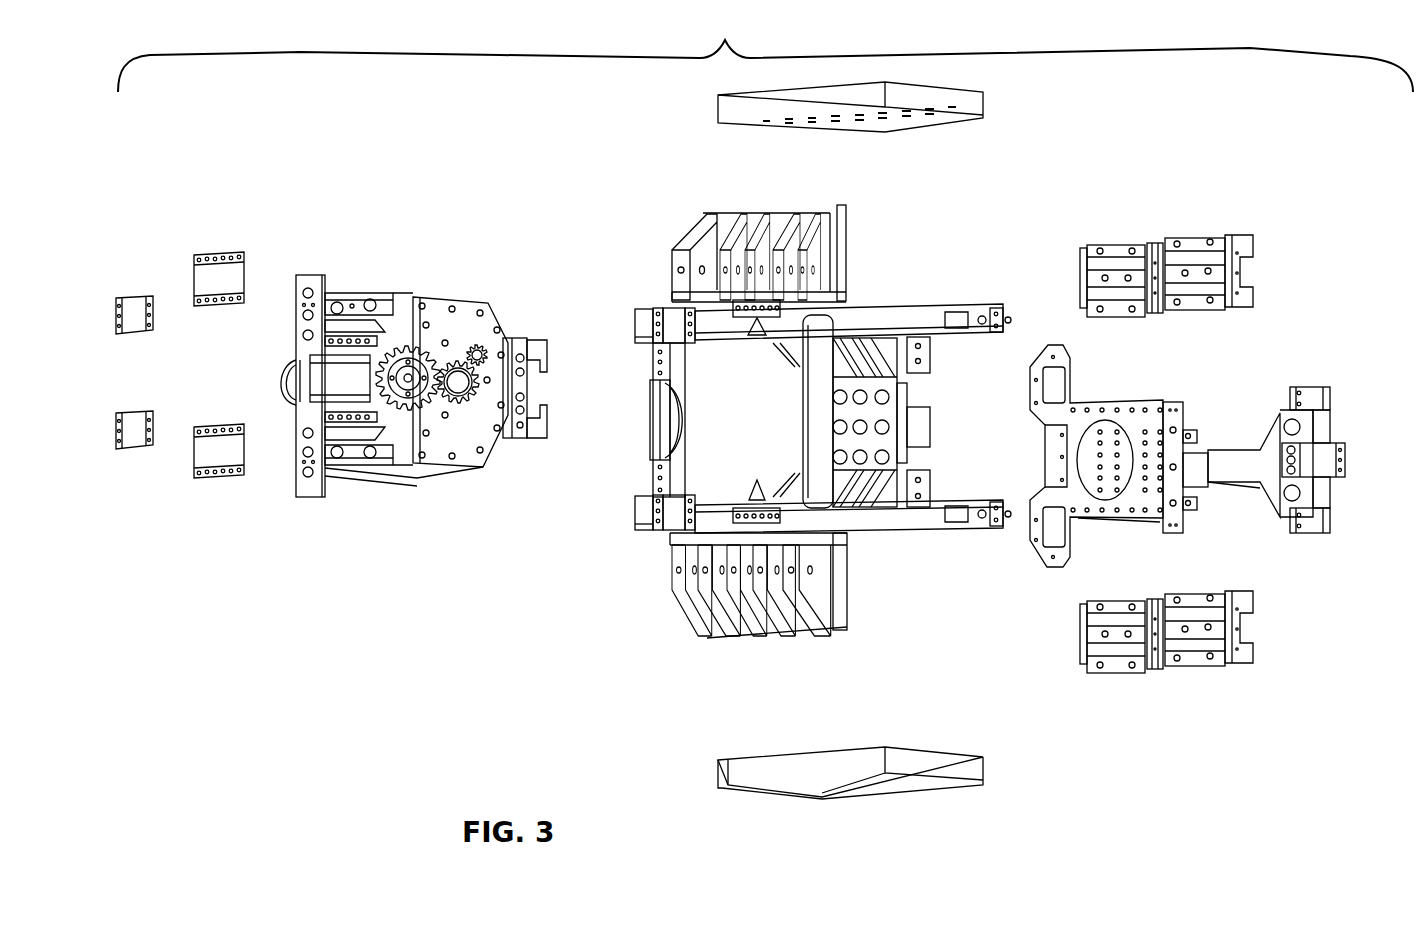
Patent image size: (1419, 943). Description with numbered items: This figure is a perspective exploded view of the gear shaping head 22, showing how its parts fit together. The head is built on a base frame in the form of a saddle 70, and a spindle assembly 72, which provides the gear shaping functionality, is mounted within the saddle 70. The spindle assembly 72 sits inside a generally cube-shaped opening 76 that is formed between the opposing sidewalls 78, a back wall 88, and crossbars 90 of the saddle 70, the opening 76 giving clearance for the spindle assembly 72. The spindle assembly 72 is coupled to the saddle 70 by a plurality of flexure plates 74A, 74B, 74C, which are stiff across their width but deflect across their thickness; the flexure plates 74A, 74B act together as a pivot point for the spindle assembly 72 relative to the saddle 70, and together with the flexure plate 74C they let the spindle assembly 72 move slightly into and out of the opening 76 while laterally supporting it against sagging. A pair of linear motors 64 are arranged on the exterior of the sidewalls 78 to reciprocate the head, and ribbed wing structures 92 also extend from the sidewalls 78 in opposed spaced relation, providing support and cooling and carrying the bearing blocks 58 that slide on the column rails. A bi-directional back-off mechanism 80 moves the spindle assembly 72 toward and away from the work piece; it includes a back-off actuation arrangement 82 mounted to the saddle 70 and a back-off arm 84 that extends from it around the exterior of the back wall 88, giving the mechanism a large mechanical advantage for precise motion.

The gear shaping head 22 is at (765, 51).
The bearing blocks 58 is at (1110, 245).
The linear motors 64 is at (973, 102).
The saddle 70 is at (793, 430).
The spindle assembly 72 is at (367, 295).
The flexure plates 74A is at (133, 297).
The flexure plates 74B is at (667, 317).
The flexure plate 74C is at (217, 253).
The opening 76 is at (715, 392).
The sidewalls 78 is at (902, 313).
The back-off mechanism 80 is at (1198, 420).
The back-off actuation arrangement 82 is at (1037, 347).
The back-off arm 84 is at (1238, 448).
The back wall 88 is at (905, 400).
The crossbars 90 is at (817, 483).
The wing structures 92 is at (738, 205).